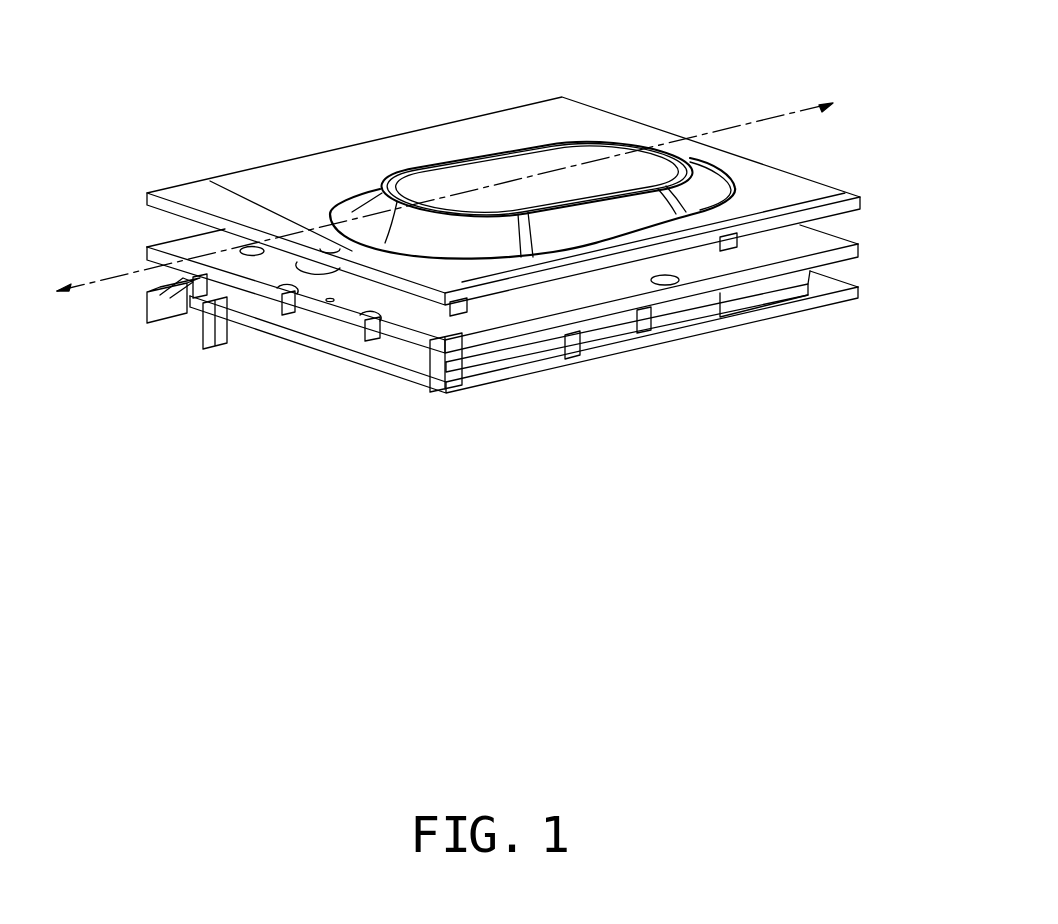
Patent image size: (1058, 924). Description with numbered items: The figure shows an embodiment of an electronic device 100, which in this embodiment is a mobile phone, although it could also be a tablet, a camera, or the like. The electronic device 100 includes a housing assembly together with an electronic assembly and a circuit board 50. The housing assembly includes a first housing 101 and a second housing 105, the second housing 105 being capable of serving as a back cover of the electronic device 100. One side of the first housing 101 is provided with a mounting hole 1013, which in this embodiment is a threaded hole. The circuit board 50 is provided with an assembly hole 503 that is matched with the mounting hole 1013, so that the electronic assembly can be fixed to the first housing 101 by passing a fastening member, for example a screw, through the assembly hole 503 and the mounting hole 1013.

The electronic device 100 is at (316, 46).
The second housing 105 is at (697, 187).
The circuit board 50 is at (818, 240).
The first housing 101 is at (790, 287).
The assembly hole 503 is at (655, 284).
The mounting hole 1013 is at (648, 315).